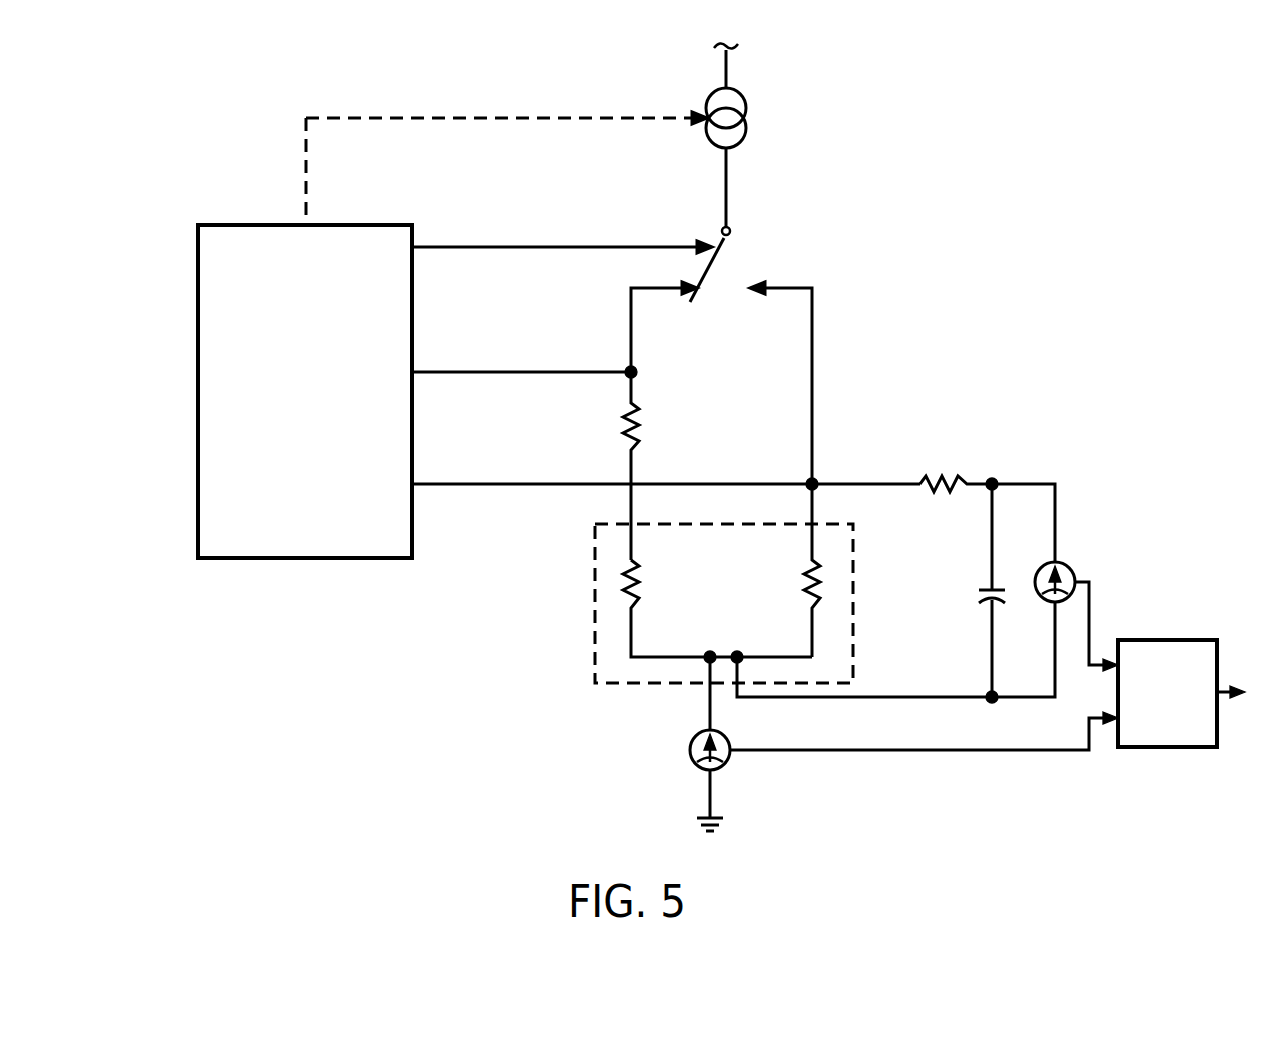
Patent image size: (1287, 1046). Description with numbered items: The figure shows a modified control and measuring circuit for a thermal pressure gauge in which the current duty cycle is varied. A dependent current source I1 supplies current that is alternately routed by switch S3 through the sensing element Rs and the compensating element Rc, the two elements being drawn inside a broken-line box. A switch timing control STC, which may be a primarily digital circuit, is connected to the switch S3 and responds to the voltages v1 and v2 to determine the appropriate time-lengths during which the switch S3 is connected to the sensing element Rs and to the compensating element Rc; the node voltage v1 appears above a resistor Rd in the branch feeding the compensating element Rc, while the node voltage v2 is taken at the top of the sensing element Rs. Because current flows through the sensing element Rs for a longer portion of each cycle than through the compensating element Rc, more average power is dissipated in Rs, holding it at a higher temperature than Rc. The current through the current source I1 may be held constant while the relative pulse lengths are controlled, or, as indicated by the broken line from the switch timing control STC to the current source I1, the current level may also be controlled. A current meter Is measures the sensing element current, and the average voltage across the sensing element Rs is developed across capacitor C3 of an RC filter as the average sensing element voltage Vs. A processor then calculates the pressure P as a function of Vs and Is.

The switch timing control STC is at (208, 388).
The current source I1 is at (744, 157).
The switch S3 is at (733, 264).
The voltage v1 is at (650, 374).
The resistor Rd is at (649, 466).
The voltage v2 is at (827, 470).
The compensating element Rc is at (717, 608).
The sensing element Rs is at (791, 570).
The current meter Is is at (904, 744).
The capacitor C3 is at (987, 586).
The average sensing element voltage Vs is at (1076, 602).
The pressure P is at (1177, 711).